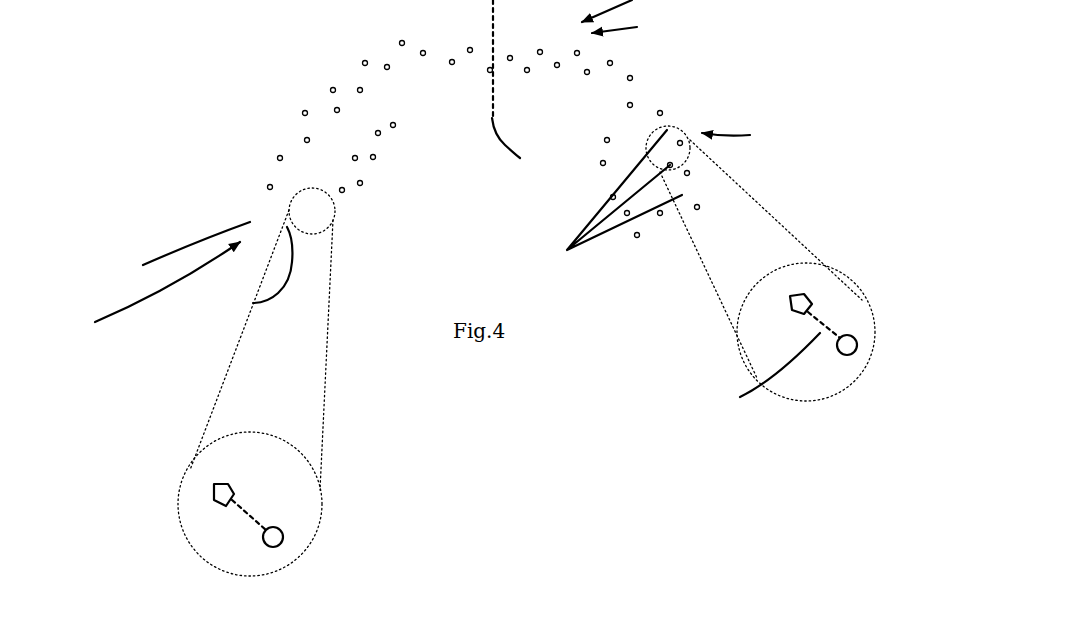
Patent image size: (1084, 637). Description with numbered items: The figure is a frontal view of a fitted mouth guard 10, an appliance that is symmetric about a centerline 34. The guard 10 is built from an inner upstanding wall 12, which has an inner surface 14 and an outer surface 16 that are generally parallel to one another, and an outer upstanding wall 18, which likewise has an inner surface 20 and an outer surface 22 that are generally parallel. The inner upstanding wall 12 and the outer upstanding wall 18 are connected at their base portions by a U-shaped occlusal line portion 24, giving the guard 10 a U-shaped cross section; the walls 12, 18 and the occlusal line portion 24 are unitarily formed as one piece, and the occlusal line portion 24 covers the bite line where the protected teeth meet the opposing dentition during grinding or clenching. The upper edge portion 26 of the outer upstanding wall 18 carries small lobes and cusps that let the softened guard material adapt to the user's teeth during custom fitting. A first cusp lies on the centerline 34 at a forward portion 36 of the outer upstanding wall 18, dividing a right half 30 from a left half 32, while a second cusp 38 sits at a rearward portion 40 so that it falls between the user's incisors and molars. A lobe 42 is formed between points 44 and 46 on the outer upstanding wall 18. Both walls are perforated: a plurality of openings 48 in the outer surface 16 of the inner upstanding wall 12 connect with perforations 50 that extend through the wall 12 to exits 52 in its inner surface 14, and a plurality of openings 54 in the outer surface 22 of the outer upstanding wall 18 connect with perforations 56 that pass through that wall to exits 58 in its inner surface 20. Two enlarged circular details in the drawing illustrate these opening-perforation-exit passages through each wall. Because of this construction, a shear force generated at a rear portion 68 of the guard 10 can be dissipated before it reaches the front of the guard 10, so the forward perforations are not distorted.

The mouth guard 10 is at (248, 207).
The inner upstanding wall 12 is at (383, 135).
The inner surface of the inner upstanding wall 14 is at (370, 193).
The outer surface of the inner upstanding wall 16 is at (338, 203).
The outer upstanding wall 18 is at (308, 92).
The inner surface of the outer upstanding wall 20 is at (256, 178).
The outer surface of the outer upstanding wall 22 is at (270, 133).
The U-shaped occlusal line portion 24 is at (250, 268).
The upper edge portion 26 is at (685, 115).
The right half 30 is at (672, 240).
The left half 32 is at (169, 253).
The centerline 34 is at (525, 90).
The forward portion 36 is at (626, 21).
The second cusp 38 is at (660, 88).
The rearward portion 40 is at (741, 133).
The lobe 42 is at (278, 113).
The point 44 is at (672, 97).
The point 46 is at (710, 208).
The openings 48 is at (308, 217).
The perforations 50 is at (333, 75).
The exits 52 is at (218, 482).
The openings 54 is at (917, 338).
The perforations 56 is at (760, 379).
The exits 58 is at (800, 290).
The rear portion 68 is at (142, 295).